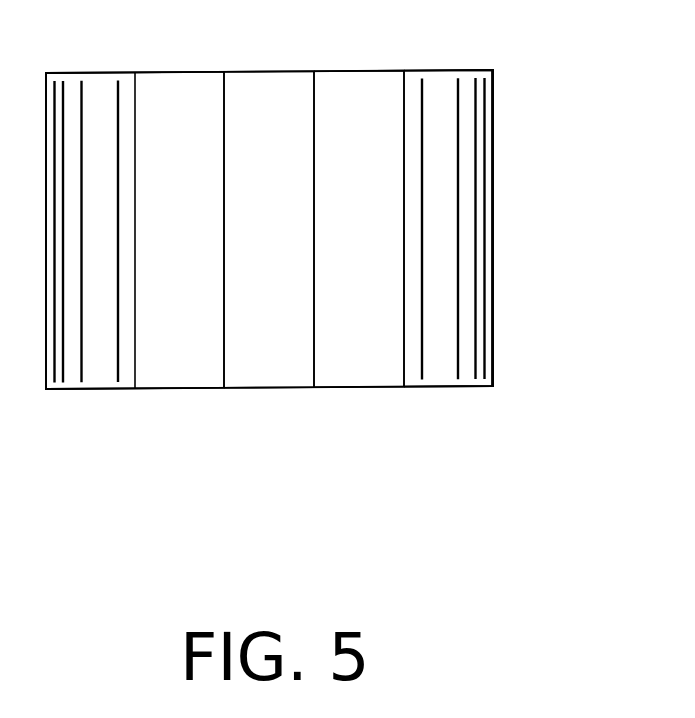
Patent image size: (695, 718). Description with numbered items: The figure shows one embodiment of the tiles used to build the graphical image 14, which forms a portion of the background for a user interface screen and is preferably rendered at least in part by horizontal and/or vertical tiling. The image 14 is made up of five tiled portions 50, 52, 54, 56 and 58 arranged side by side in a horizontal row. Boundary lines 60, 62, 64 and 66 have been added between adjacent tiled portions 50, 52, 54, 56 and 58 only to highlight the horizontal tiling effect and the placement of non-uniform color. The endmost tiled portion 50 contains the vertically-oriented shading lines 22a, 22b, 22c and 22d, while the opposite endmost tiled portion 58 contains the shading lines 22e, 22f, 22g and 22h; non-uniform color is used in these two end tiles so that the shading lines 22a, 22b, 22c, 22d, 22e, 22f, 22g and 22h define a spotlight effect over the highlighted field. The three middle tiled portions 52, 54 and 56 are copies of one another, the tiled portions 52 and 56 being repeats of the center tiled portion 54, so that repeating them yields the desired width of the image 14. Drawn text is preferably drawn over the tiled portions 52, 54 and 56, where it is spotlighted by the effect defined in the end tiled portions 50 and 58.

The graphical image 14 is at (536, 108).
The tiled portion 50 is at (99, 90).
The tiled portion 58 is at (437, 87).
The boundary line 60 is at (135, 88).
The boundary line 62 is at (224, 88).
The boundary line 64 is at (314, 88).
The boundary line 66 is at (404, 87).
The tiled portion 52 is at (166, 178).
The center tiled portion 54 is at (255, 178).
The tiled portion 56 is at (344, 178).
The shading line 22a is at (56, 373).
The shading line 22b is at (65, 372).
The shading line 22c is at (83, 372).
The shading line 22d is at (119, 372).
The shading line 22e is at (422, 362).
The shading line 22f is at (458, 358).
The shading line 22g is at (477, 350).
The shading line 22h is at (485, 347).